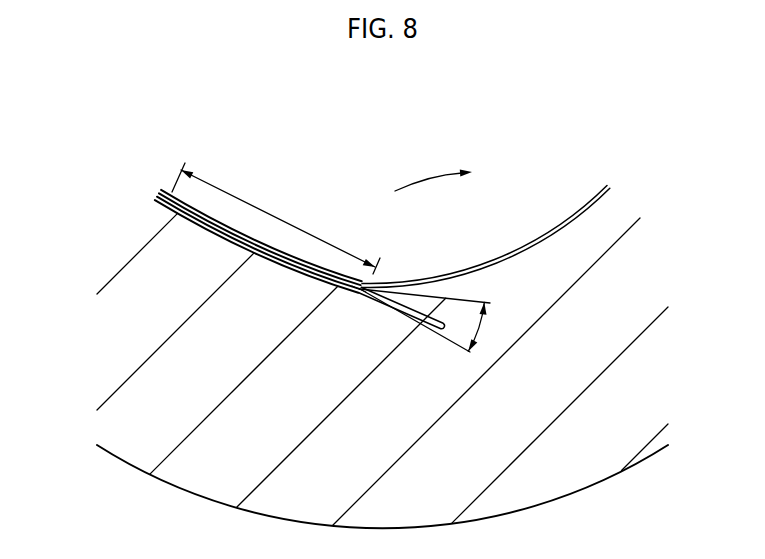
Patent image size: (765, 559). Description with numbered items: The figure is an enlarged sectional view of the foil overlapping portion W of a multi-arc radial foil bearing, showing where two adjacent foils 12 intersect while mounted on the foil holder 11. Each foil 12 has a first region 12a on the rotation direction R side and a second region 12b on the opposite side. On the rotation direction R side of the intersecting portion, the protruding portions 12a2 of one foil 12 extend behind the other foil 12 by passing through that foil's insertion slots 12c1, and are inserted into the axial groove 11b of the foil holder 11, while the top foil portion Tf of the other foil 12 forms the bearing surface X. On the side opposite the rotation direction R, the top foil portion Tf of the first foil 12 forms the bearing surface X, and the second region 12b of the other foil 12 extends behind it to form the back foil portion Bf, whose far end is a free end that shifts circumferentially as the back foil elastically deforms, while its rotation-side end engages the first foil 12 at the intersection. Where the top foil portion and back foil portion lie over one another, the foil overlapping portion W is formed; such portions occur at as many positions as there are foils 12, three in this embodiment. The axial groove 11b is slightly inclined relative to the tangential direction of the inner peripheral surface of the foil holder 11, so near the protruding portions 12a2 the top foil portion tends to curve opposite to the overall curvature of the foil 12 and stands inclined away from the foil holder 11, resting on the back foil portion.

The foil holder 11 is at (600, 342).
The axial groove 11b is at (421, 327).
The foil 12 is at (323, 277).
The first region 12a is at (177, 208).
The second region 12b is at (257, 256).
The protruding portion 12a2 is at (393, 310).
The insertion slot 12c1 is at (356, 294).
The foil overlapping portion W is at (276, 218).
The rotation direction R is at (443, 172).
The bearing surface X is at (445, 280).